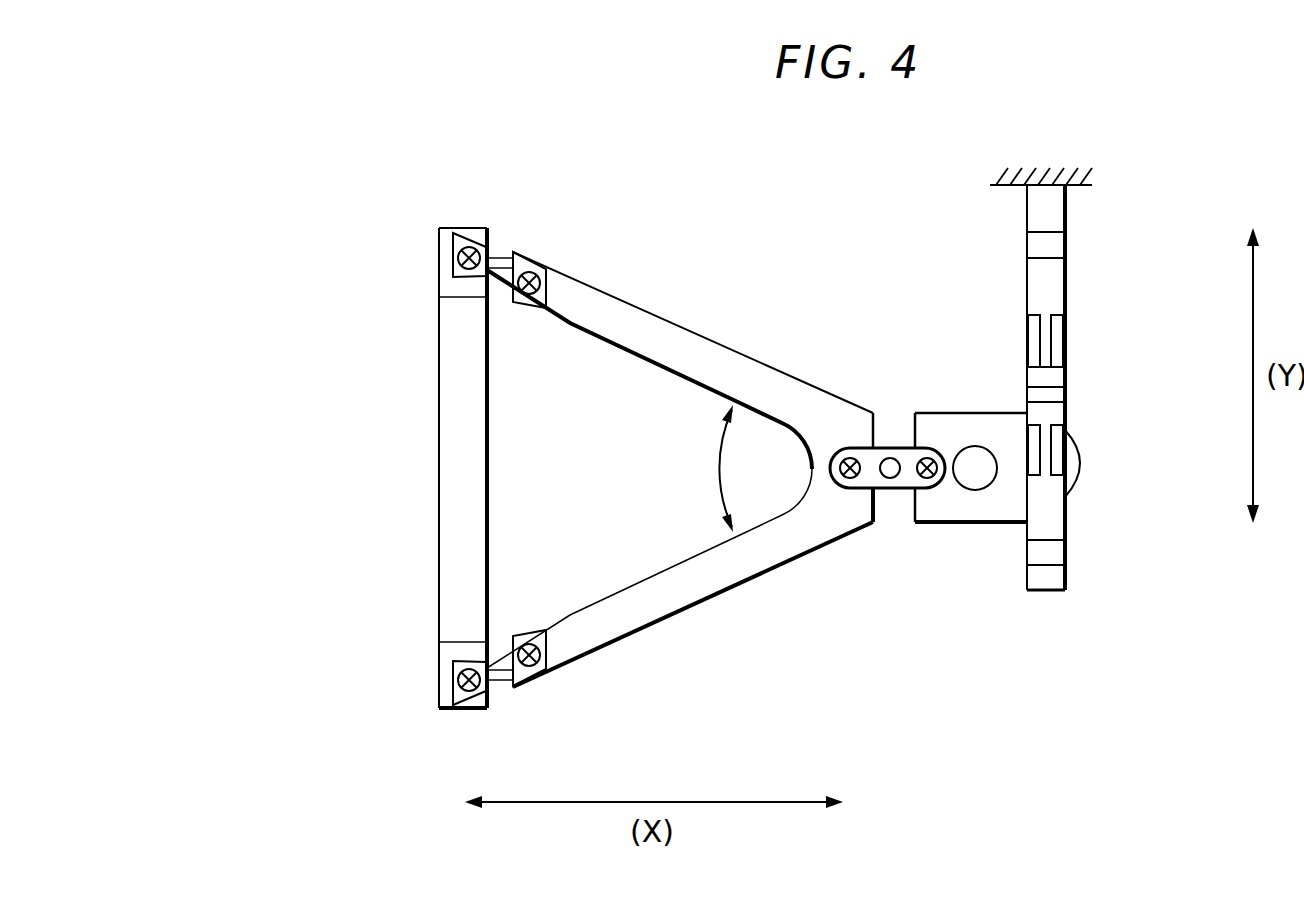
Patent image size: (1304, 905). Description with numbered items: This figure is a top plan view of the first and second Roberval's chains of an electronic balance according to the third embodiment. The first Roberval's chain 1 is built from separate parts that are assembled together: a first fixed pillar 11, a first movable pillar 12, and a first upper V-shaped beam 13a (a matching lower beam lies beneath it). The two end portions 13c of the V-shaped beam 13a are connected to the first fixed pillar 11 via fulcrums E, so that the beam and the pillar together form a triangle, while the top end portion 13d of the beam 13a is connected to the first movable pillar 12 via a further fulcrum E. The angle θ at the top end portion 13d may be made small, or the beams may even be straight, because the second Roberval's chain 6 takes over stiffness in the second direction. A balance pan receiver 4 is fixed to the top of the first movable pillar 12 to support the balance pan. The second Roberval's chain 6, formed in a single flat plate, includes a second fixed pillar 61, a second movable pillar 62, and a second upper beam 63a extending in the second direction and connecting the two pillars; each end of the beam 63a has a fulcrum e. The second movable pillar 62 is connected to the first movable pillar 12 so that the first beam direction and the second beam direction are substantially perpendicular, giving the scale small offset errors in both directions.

The first Roberval's chain 1 is at (740, 286).
The first fixed pillar 11 is at (456, 463).
The first movable pillar 12 is at (985, 525).
The first upper V-shaped beam 13a is at (750, 560).
The end portion of V-shaped beam 13c is at (540, 262).
The top end portion of V-shaped beam 13d is at (838, 420).
The balance pan receiver 4 is at (977, 456).
The second Roberval's chain 6 is at (1090, 244).
The second fixed pillar 61 is at (1040, 218).
The second movable pillar 62 is at (1100, 455).
The second upper beam 63a is at (1053, 292).
The fulcrum E is at (492, 266).
The fulcrum e is at (1035, 250).